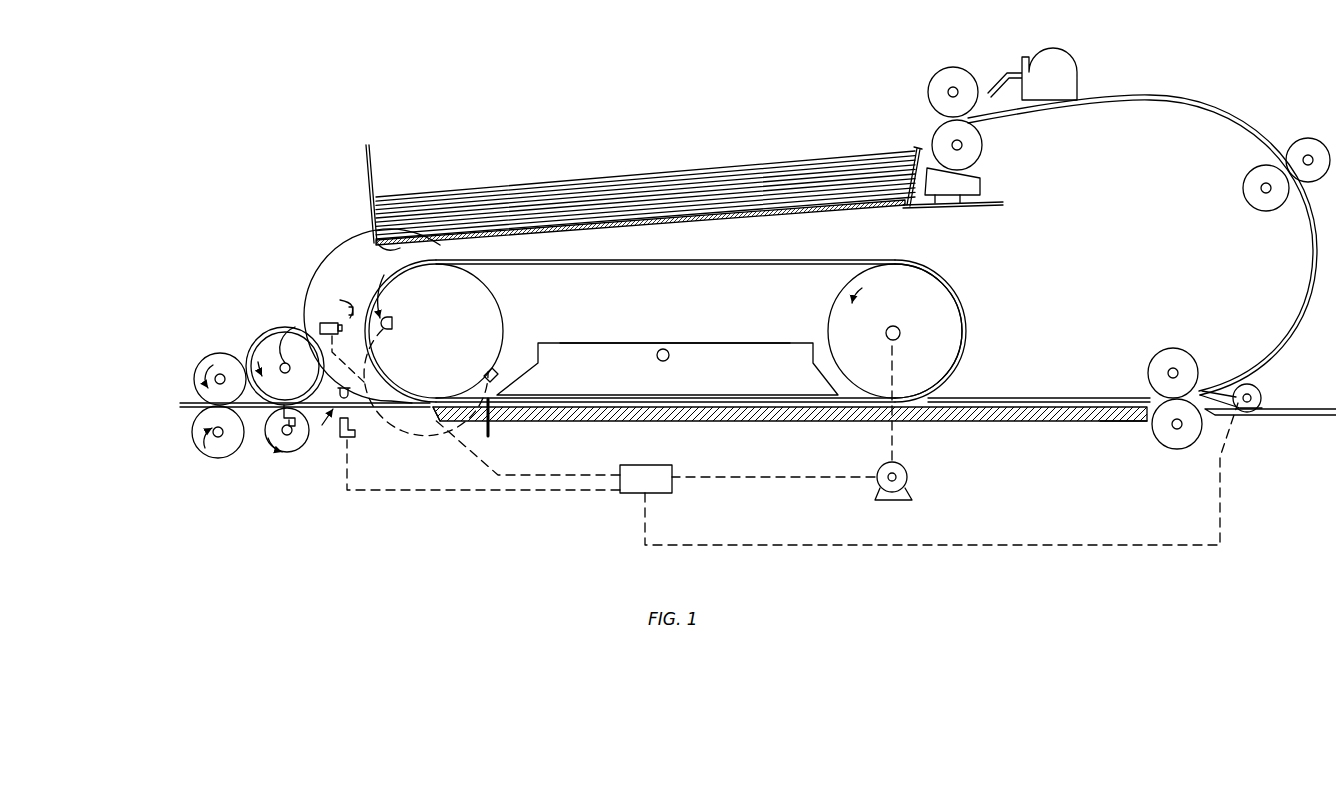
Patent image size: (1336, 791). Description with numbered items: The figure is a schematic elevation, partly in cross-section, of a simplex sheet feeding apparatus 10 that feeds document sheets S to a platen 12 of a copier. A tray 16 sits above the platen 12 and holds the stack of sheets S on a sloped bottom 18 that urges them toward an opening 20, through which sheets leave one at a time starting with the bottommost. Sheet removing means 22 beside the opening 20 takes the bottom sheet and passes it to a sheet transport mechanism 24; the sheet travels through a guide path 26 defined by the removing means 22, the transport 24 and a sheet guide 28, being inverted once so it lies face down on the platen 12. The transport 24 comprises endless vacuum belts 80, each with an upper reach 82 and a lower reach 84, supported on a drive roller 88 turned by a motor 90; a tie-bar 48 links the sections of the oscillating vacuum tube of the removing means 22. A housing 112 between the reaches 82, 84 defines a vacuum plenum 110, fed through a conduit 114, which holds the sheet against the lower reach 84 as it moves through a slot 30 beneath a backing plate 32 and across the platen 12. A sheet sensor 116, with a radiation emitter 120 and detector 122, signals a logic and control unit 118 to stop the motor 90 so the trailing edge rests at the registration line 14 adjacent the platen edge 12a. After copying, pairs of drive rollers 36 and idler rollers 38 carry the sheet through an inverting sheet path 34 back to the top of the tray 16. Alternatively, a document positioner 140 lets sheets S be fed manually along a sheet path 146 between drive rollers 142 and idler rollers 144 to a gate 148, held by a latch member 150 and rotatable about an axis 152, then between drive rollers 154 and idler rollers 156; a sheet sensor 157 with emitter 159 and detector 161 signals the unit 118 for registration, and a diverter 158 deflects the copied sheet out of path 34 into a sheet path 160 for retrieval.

The sheet feeding apparatus 10 is at (242, 240).
The platen 12 is at (734, 423).
The platen edge 12a is at (434, 418).
The registration line 14 is at (494, 419).
The tray 16 is at (364, 160).
The tray bottom 18 is at (710, 220).
The opening 20 is at (379, 245).
The sheet removing means 22 is at (360, 272).
The sheet transport mechanism 24 is at (532, 263).
The guide path 26 is at (342, 299).
The sheet guide 28 is at (338, 321).
The slot 30 is at (1028, 422).
The backing plate 32 is at (1004, 396).
The inverting sheet path 34 is at (1302, 285).
The drive rollers 36 is at (982, 146).
The idler rollers 38 is at (926, 84).
The tie-bar 48 is at (484, 370).
The vacuum belts 80 is at (758, 266).
The upper reach 82 is at (694, 266).
The lower reach 84 is at (632, 396).
The drive roller 88 is at (832, 296).
The motor 90 is at (909, 476).
The vacuum plenum 110 is at (598, 370).
The housing 112 is at (628, 343).
The conduit 114 is at (669, 355).
The sheet sensor 116 is at (280, 313).
The logic and control unit 118 is at (676, 486).
The radiation emitter 120 is at (396, 320).
The detector 122 is at (304, 322).
The document positioner apparatus 140 is at (202, 338).
The drive rollers 142 is at (206, 360).
The idler rollers 144 is at (210, 451).
The sheet path 146 is at (186, 407).
The gate 148 is at (280, 404).
The latch member 150 is at (272, 453).
The axis of rotation 152 is at (286, 334).
The drive rollers 154 is at (256, 350).
The idler rollers 156 is at (290, 460).
The sheet sensor 157 is at (324, 427).
The diverter 158 is at (1246, 410).
The emitter 159 is at (350, 394).
The sheet path 160 is at (1300, 409).
The detector 161 is at (356, 442).
The document sheets S is at (560, 188).